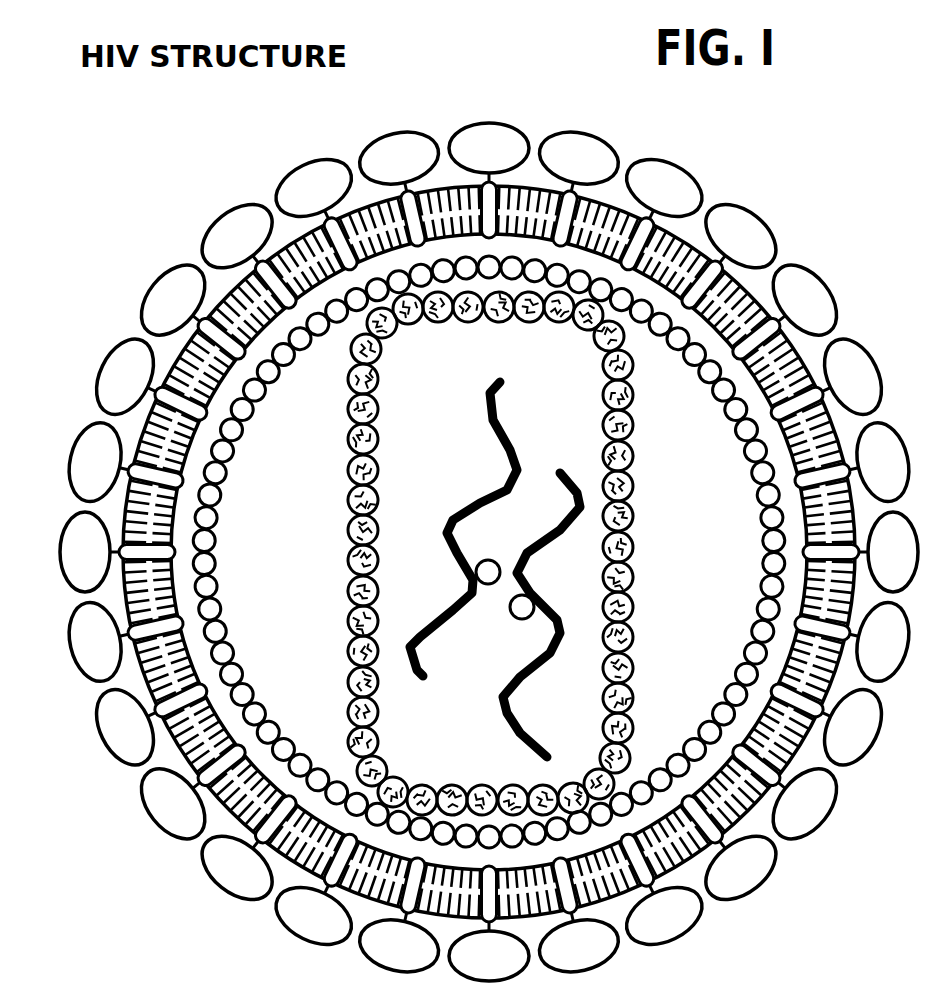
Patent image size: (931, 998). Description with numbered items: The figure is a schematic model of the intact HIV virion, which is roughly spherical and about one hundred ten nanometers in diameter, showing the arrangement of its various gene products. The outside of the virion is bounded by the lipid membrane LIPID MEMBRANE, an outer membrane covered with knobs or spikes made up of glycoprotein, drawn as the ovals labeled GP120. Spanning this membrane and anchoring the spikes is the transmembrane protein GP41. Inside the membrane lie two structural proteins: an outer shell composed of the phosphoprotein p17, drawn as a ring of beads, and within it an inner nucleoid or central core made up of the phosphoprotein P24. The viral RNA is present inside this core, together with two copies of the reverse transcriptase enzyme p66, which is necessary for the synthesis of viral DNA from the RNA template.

The glycoprotein gp160/120 GP120 is at (606, 146).
The transmembrane protein gp41 GP41 is at (645, 247).
The outer membrane LIPID MEMBRANE is at (233, 300).
The phosphoprotein p17 is at (743, 445).
The phosphoprotein p24 P24 is at (633, 493).
The viral RNA is at (483, 402).
The reverse transcriptase enzyme p66/51 p66 is at (517, 617).